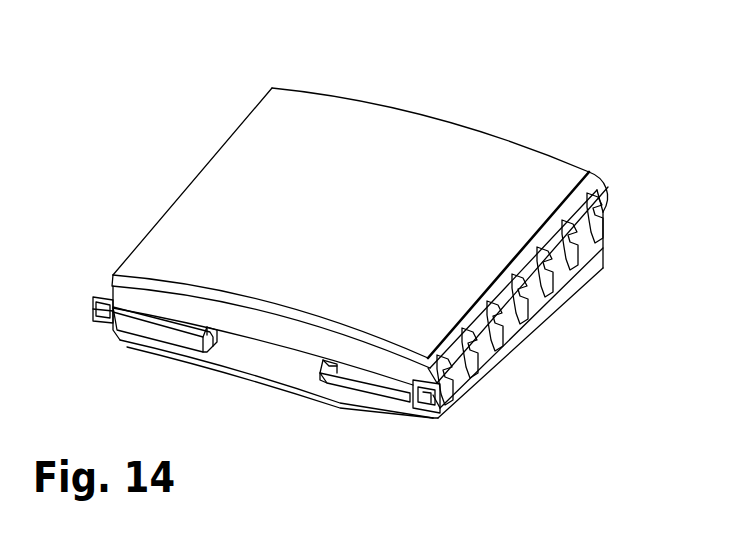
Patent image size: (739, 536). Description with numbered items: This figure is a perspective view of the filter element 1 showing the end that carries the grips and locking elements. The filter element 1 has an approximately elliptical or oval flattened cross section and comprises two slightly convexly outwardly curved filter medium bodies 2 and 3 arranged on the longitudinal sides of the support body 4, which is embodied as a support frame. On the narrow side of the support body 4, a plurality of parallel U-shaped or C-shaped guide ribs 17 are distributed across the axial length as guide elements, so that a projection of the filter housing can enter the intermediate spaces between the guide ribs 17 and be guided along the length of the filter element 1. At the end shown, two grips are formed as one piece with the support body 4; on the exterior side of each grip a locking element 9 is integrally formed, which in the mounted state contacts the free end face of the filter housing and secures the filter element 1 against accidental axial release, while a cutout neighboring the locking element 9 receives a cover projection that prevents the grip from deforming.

The filter element 1 is at (303, 74).
The filter medium body 2 is at (452, 132).
The filter medium body 3 is at (293, 397).
The support body 4 is at (490, 347).
The locking element 9 is at (447, 397).
The guide ribs 17 is at (580, 273).